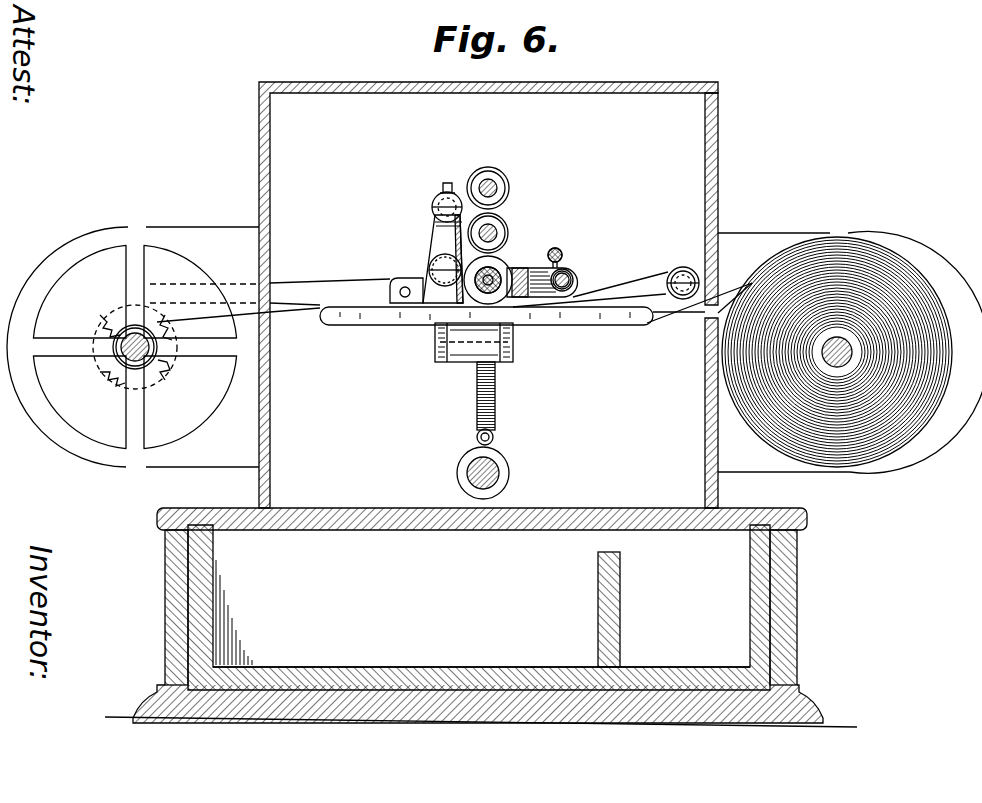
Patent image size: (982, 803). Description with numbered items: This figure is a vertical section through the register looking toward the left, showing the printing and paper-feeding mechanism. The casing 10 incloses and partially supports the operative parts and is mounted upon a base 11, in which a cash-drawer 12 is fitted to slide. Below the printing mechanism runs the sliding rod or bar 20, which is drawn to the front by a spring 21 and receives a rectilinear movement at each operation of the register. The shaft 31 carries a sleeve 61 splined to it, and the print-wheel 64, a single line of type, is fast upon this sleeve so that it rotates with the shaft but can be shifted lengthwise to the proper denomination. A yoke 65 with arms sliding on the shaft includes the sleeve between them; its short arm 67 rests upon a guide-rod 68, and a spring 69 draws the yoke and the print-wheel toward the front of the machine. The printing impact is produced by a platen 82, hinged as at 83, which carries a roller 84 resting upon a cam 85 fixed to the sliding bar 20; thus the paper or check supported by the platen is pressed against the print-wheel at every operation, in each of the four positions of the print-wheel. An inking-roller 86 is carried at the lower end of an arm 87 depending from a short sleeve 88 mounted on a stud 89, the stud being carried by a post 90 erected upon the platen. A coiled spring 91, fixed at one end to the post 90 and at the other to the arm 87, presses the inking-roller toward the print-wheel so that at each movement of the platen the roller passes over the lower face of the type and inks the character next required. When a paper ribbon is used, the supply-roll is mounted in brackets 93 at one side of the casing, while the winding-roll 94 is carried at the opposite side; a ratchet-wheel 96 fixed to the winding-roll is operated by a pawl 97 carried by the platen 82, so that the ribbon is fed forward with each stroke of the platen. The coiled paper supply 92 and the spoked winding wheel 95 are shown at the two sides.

The casing 10 is at (259, 157).
The base 11 is at (797, 570).
The cash-drawer 12 is at (495, 672).
The sliding rod or bar 20 is at (500, 475).
The spring 21 is at (494, 436).
The shaft 31 is at (497, 290).
The sleeve 61 is at (478, 291).
The print-wheel 64 is at (495, 265).
The yoke 65 is at (524, 270).
The short arm 67 is at (575, 282).
The guide-rod 68 is at (574, 277).
The spring 69 is at (562, 253).
The platen 82 is at (577, 318).
The hinge 83 is at (682, 268).
The roller 84 is at (468, 346).
The cam 85 is at (497, 400).
The inking-roller 86 is at (433, 268).
The arm 87 is at (437, 238).
The short sleeve 88 is at (436, 205).
The stud 89 is at (450, 203).
The post 90 is at (432, 295).
The coiled spring 91 is at (446, 193).
The tape spool 92 is at (918, 285).
The brackets 93 is at (850, 352).
The winding-roll 94 is at (120, 358).
The wheel 95 is at (133, 347).
The ratchet-wheel 96 is at (107, 332).
The pawl 97 is at (305, 290).